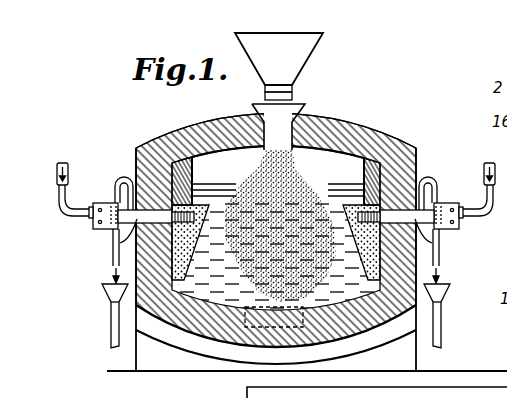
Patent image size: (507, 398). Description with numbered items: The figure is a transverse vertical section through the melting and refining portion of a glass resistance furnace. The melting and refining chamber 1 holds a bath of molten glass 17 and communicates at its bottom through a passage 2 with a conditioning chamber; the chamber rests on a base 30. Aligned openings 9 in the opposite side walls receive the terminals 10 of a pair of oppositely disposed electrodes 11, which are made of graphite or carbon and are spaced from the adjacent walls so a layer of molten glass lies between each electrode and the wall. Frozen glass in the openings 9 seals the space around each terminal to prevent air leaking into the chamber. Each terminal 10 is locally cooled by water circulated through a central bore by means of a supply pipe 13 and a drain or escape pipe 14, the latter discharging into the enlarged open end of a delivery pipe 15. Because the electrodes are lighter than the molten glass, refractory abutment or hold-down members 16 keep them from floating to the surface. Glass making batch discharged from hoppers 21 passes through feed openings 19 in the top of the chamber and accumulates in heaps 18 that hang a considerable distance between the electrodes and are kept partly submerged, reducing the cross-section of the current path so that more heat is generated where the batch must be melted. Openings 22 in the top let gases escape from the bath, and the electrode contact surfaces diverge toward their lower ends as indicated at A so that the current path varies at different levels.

The melting and refining chamber 1 is at (150, 333).
The passage 2 is at (242, 348).
The openings 9 is at (150, 176).
The terminals 10 is at (112, 238).
The electrodes 11 is at (200, 203).
The supply pipe 13 is at (473, 227).
The drain or escape pipe 14 is at (440, 197).
The delivery pipe 15 is at (110, 326).
The refractory abutment or hold-down members 16 is at (182, 160).
The bath of molten glass 17 is at (366, 160).
The heaps 18 is at (322, 124).
The feed openings 19 is at (293, 117).
The hoppers 21 is at (320, 43).
The openings 22 is at (190, 128).
The base 30 is at (443, 390).
The diverging contact surfaces A is at (128, 258).